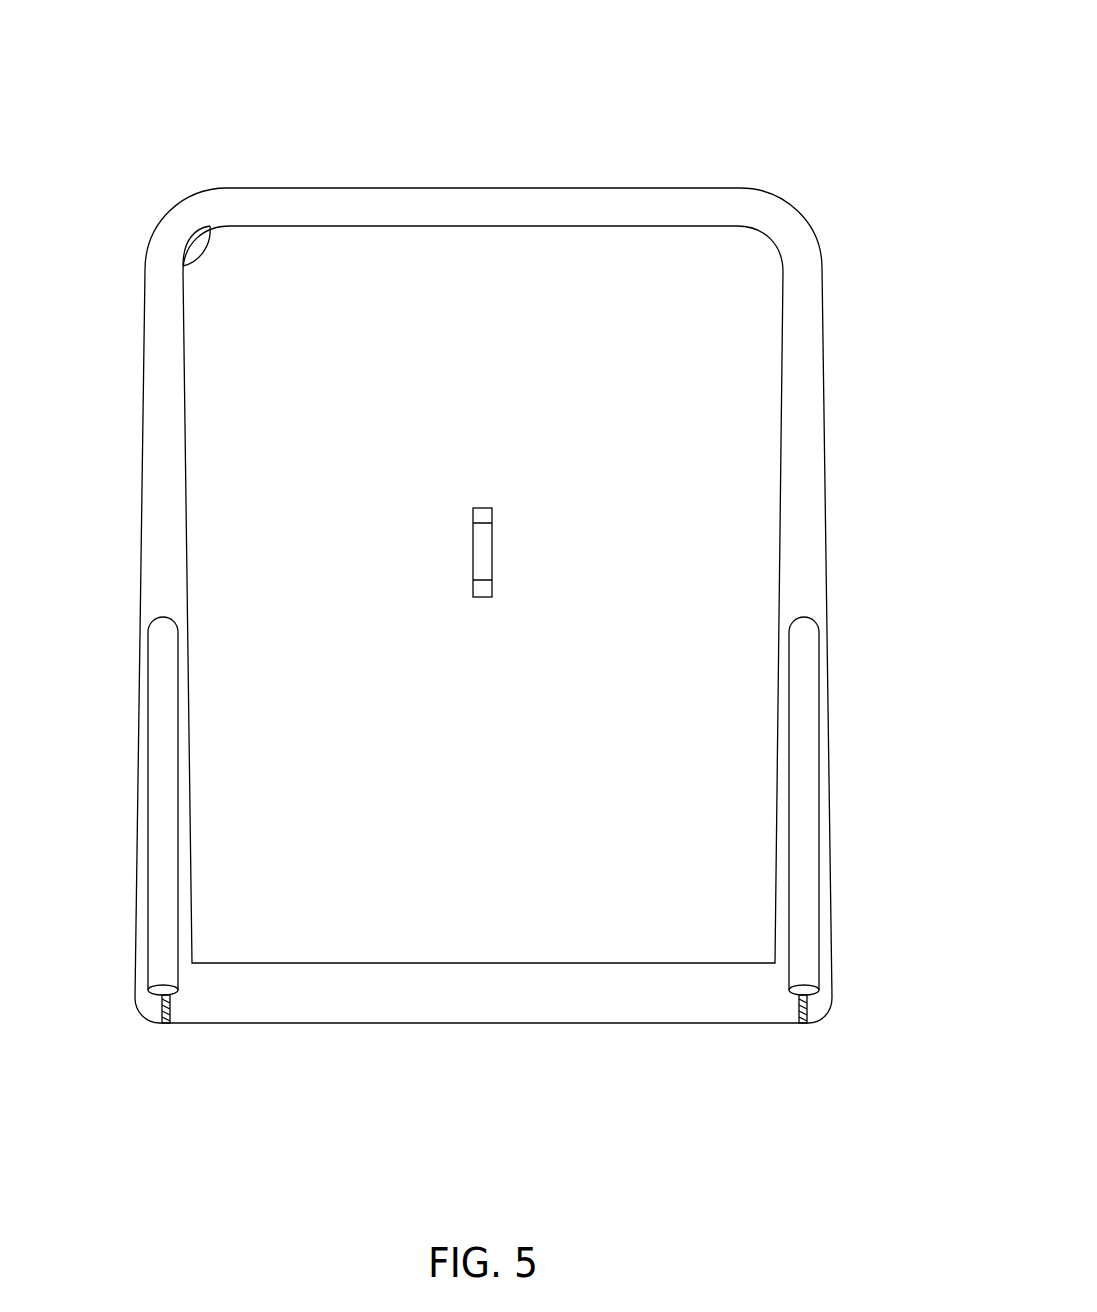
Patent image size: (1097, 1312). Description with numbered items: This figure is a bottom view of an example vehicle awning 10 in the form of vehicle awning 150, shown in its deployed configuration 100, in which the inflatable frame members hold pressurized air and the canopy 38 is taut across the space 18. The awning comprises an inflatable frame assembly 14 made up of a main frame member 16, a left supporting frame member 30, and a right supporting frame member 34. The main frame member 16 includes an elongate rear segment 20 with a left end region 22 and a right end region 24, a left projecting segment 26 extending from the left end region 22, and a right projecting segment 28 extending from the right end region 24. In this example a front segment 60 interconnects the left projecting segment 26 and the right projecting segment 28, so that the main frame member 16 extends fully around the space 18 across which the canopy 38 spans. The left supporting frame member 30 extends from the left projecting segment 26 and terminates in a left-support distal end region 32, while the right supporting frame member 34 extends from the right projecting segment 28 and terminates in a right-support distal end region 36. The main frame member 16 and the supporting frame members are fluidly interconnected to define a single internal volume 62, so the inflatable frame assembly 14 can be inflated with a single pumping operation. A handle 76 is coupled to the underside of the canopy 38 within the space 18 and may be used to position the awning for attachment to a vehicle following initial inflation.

The vehicle awning 10 is at (899, 42).
The deployed configuration 100 is at (889, 82).
The vehicle awning 150 is at (797, 42).
The inflatable frame assembly 14 is at (438, 124).
The main frame member 16 is at (403, 183).
The space 18 is at (722, 455).
The elongate rear segment 20 is at (572, 1028).
The left end region 22 is at (197, 1008).
The right end region 24 is at (770, 1008).
The left projecting segment 26 is at (153, 507).
The right projecting segment 28 is at (813, 507).
The left supporting frame member 30 is at (157, 722).
The left-support distal end region 32 is at (813, 978).
The right supporting frame member 34 is at (813, 722).
The right-support distal end region 36 is at (157, 978).
The canopy 38 is at (496, 380).
The front segment 60 is at (548, 195).
The single internal volume 62 is at (430, 1010).
The handle 76 is at (473, 552).